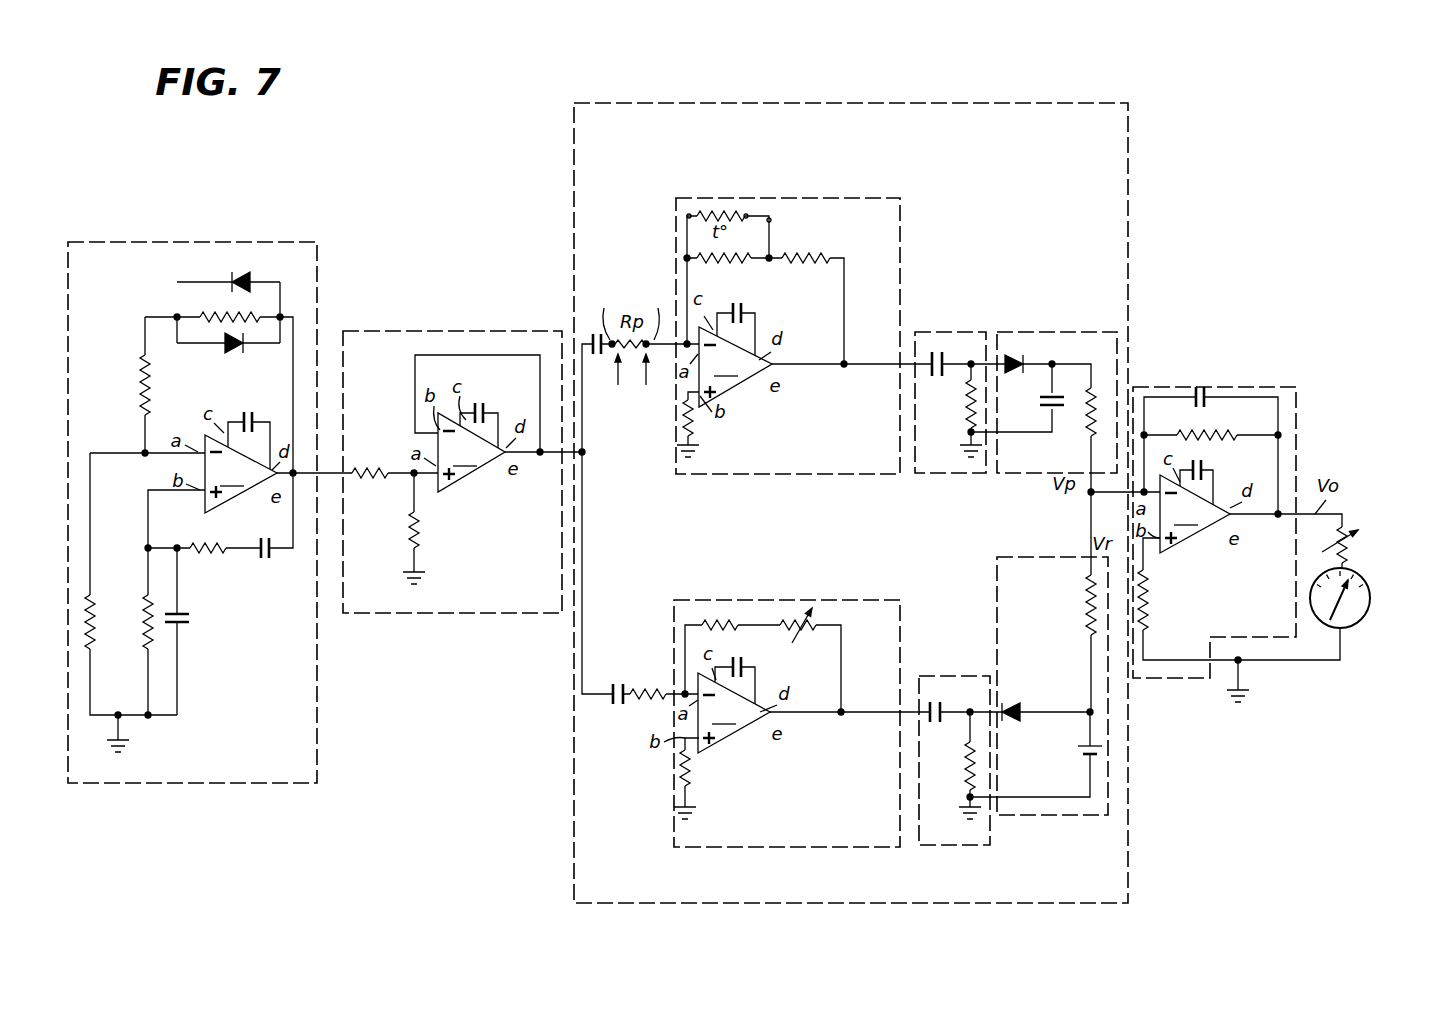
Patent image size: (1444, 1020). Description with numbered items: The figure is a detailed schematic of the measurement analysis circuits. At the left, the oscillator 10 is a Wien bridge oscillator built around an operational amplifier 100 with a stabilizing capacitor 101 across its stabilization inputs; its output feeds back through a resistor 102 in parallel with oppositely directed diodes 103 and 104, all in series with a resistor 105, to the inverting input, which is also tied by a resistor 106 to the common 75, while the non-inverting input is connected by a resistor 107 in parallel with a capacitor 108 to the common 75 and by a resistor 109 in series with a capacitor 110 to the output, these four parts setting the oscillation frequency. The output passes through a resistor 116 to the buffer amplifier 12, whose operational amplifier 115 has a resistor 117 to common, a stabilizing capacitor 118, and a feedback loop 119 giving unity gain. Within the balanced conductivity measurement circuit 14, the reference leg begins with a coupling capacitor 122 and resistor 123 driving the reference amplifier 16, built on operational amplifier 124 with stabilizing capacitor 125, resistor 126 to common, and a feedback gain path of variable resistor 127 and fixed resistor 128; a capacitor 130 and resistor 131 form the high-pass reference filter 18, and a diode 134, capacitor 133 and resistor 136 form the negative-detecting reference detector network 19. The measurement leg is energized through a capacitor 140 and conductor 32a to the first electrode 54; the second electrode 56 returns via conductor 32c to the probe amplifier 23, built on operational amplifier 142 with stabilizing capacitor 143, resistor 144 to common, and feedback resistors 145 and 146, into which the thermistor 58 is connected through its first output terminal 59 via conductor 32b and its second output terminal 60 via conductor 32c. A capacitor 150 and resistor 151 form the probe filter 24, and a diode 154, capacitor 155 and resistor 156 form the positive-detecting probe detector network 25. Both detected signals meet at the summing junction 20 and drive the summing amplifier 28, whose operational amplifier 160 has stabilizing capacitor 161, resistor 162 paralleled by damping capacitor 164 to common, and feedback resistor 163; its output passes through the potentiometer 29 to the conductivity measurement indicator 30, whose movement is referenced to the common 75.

The oscillator 10 is at (222, 241).
The buffer amplifier 12 is at (440, 333).
The balanced conductivity measurement circuit 14 is at (845, 101).
The reference amplifier 16 is at (804, 598).
The reference filter 18 is at (950, 674).
The reference detector network 19 is at (1027, 556).
The summing junction 20 is at (1086, 493).
The probe amplifier 23 is at (782, 474).
The probe filter 24 is at (943, 474).
The probe detector network 25 is at (1010, 474).
The summing amplifier 28 is at (1203, 385).
The potentiometer 29 is at (1356, 552).
The conductivity measurement indicator 30 is at (1368, 622).
The conductor 32a is at (600, 311).
The conductor 32b is at (770, 222).
The conductor 32c is at (648, 311).
The first electrode 54 is at (610, 381).
The second electrode 56 is at (644, 381).
The thermistor 58 is at (728, 213).
The first output terminal 59 is at (748, 213).
The second output terminal 60 is at (689, 213).
The common 75 is at (132, 752).
The operational amplifier 100 is at (241, 474).
The stabilizing capacitor 101 is at (248, 410).
The resistor 102 is at (240, 311).
The diode 103 is at (223, 340).
The diode 104 is at (243, 277).
The resistor 105 is at (143, 385).
The resistor 106 is at (95, 615).
The resistor 107 is at (142, 633).
The capacitor 108 is at (185, 623).
The resistor 109 is at (220, 556).
The capacitor 110 is at (271, 558).
The operational amplifier 115 is at (471, 452).
The resistor 116 is at (365, 486).
The resistor 117 is at (420, 537).
The stabilizing capacitor 118 is at (487, 402).
The feedback loop 119 is at (480, 357).
The coupling capacitor 122 is at (614, 705).
The resistor 123 is at (650, 692).
The operational amplifier 124 is at (734, 713).
The stabilizing capacitor 125 is at (743, 665).
The resistor 126 is at (697, 772).
The variable resistor 127 is at (820, 630).
The fixed resistor 128 is at (716, 622).
The capacitor 130 is at (944, 705).
The resistor 131 is at (967, 764).
The capacitor 133 is at (1067, 738).
The diode 134 is at (1018, 708).
The resistor 136 is at (1086, 606).
The capacitor 140 is at (612, 352).
The operational amplifier 142 is at (735, 367).
The stabilizing capacitor 143 is at (739, 312).
The resistor 144 is at (697, 421).
The resistor 145 is at (806, 256).
The resistor 146 is at (727, 264).
The capacitor 150 is at (938, 350).
The resistor 151 is at (966, 406).
The diode 154 is at (1018, 355).
The capacitor 155 is at (1046, 396).
The resistor 156 is at (1086, 425).
The operational amplifier 160 is at (1195, 514).
The stabilizing capacitor 161 is at (1210, 471).
The resistor 162 is at (1150, 607).
The feedback resistor 163 is at (1225, 435).
The damping capacitor 164 is at (1207, 404).